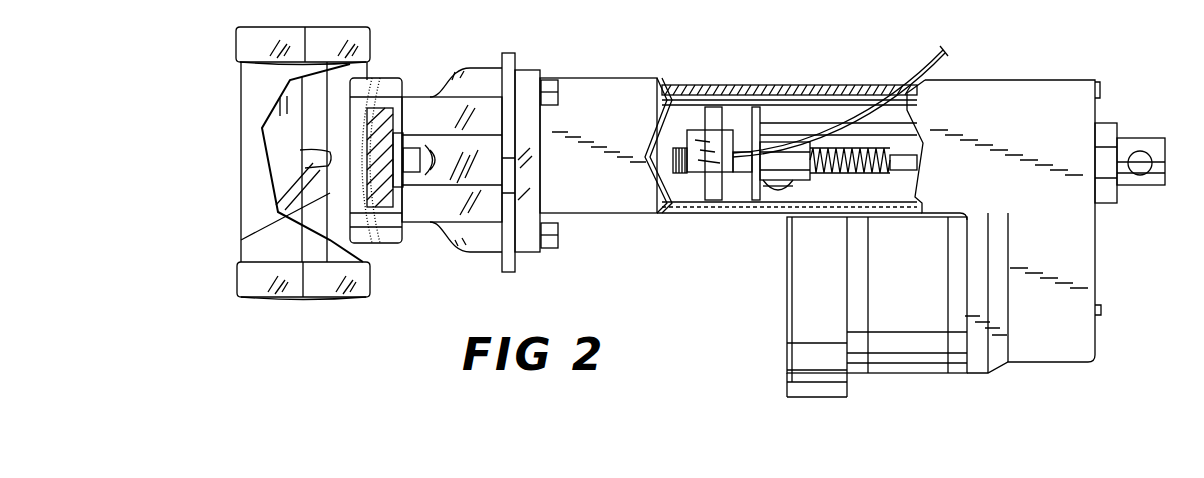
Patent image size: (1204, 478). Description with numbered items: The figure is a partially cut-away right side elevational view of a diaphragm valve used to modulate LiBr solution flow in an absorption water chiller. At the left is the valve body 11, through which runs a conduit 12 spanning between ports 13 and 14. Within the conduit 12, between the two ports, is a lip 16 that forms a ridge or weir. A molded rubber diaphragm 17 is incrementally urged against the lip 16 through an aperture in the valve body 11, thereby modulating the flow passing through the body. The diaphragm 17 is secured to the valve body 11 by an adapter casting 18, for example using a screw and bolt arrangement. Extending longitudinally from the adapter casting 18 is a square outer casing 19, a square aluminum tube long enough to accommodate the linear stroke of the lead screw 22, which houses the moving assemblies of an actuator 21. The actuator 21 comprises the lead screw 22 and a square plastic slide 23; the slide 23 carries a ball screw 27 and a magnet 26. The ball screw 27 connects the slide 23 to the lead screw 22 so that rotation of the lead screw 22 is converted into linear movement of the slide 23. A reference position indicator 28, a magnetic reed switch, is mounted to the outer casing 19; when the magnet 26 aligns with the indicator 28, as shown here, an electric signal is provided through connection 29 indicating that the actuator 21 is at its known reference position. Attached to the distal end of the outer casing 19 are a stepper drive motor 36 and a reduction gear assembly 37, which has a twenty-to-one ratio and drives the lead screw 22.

The valve body 11 is at (208, 41).
The conduit 12 is at (240, 241).
The port 13 is at (300, 26).
The port 14 is at (307, 298).
The lip 16 is at (300, 175).
The molded rubber diaphragm 17 is at (375, 81).
The adapter casting 18 is at (470, 69).
The square outer casing 19 is at (693, 87).
The actuator 21 is at (822, 122).
The lead screw 22 is at (843, 153).
The square plastic slide 23 is at (778, 130).
The magnet 26 is at (715, 110).
The ball screw 27 is at (783, 189).
The reference position indicator 28 is at (703, 152).
The connection 29 is at (944, 49).
The stepper drive motor 36 is at (910, 376).
The reduction gear assembly 37 is at (1097, 243).